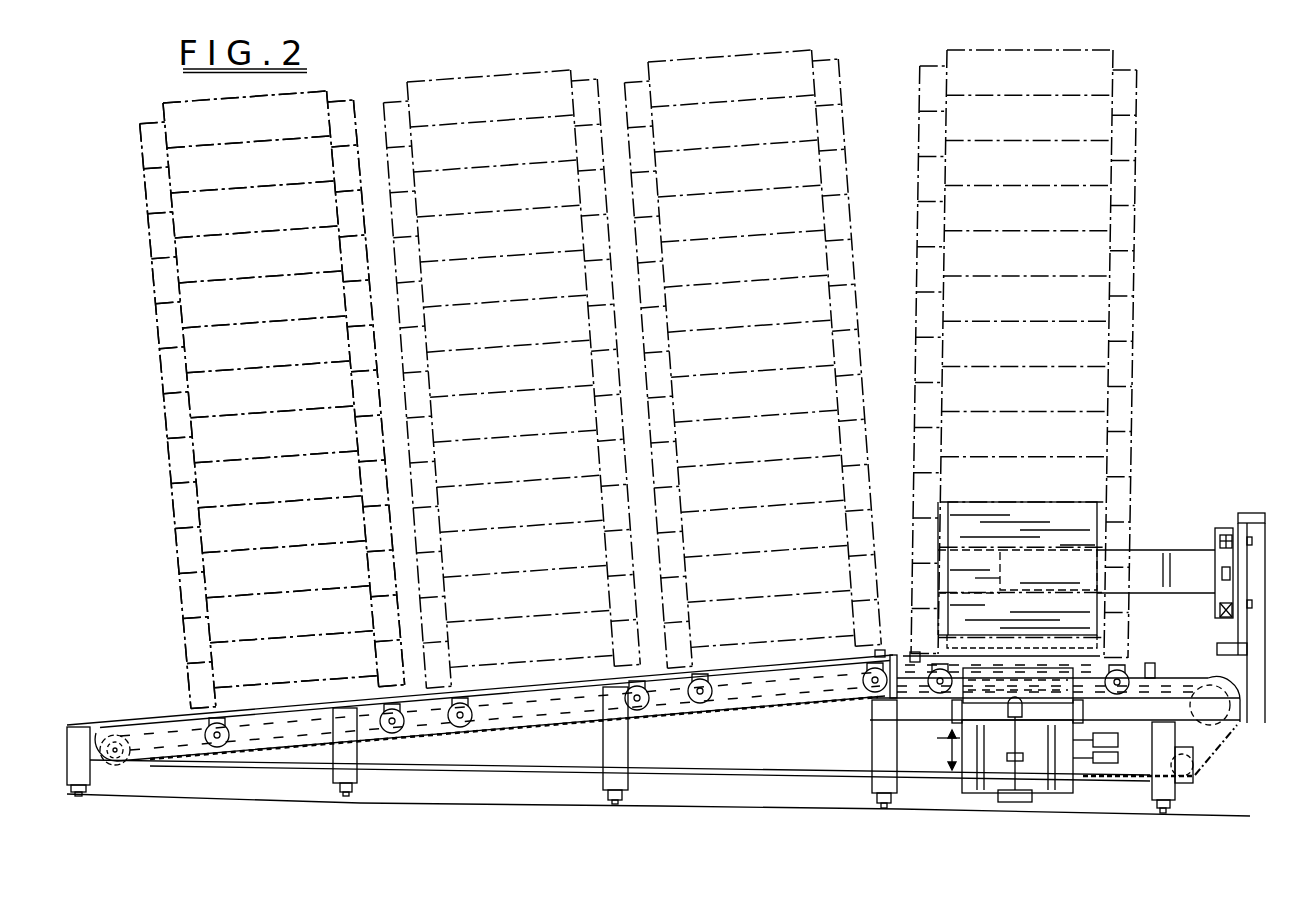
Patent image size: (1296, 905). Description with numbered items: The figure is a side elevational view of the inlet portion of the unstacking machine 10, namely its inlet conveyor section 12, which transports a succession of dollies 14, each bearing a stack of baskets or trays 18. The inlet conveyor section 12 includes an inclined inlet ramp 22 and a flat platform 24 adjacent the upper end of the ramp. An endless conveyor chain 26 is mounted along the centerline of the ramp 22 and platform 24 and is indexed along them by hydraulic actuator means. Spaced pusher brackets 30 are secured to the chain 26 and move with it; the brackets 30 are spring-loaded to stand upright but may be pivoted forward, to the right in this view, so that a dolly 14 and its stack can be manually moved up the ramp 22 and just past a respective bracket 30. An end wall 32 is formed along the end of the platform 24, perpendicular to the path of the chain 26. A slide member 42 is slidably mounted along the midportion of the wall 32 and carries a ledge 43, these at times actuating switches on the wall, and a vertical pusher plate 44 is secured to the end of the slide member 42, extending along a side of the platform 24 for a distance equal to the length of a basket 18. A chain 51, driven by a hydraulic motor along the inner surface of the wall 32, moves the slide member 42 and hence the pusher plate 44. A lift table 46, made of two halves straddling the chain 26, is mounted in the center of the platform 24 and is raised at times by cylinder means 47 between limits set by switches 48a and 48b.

The unstacking machine 10 is at (1196, 452).
The inlet conveyor section 12 is at (163, 624).
The dolly 14 is at (283, 700).
The basket or tray 18 is at (170, 382).
The inclined inlet ramp 22 is at (135, 726).
The flat platform 24 is at (1175, 695).
The endless conveyor chain 26 is at (678, 775).
The pusher bracket 30 is at (185, 727).
The end wall 32 is at (1245, 513).
The slide member 42 is at (1222, 528).
The ledge 43 is at (1218, 560).
The vertical pusher plate 44 is at (1087, 520).
The lift table 46 is at (1015, 690).
The cylinder means 47 is at (928, 749).
The switch 48a is at (1090, 778).
The switch 48b is at (1118, 757).
The chain 51 is at (1223, 582).